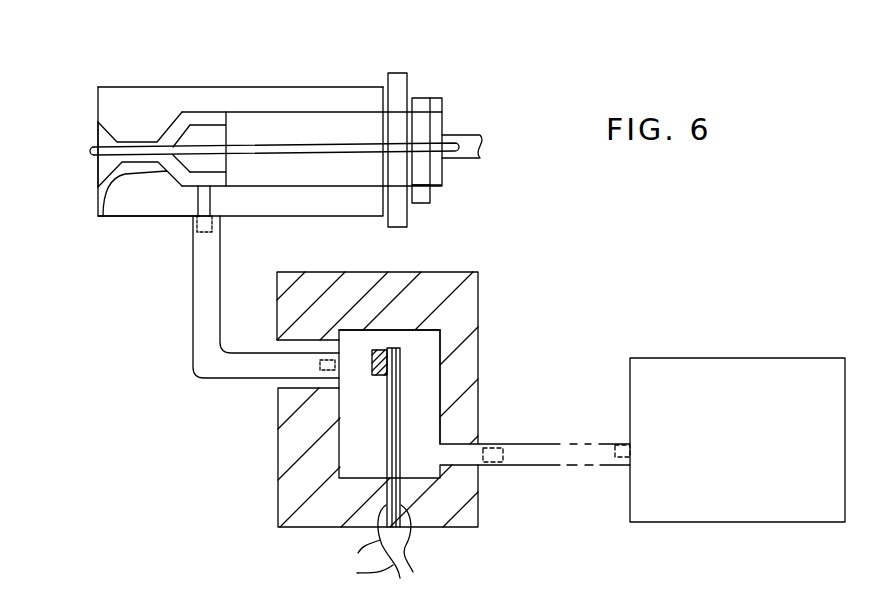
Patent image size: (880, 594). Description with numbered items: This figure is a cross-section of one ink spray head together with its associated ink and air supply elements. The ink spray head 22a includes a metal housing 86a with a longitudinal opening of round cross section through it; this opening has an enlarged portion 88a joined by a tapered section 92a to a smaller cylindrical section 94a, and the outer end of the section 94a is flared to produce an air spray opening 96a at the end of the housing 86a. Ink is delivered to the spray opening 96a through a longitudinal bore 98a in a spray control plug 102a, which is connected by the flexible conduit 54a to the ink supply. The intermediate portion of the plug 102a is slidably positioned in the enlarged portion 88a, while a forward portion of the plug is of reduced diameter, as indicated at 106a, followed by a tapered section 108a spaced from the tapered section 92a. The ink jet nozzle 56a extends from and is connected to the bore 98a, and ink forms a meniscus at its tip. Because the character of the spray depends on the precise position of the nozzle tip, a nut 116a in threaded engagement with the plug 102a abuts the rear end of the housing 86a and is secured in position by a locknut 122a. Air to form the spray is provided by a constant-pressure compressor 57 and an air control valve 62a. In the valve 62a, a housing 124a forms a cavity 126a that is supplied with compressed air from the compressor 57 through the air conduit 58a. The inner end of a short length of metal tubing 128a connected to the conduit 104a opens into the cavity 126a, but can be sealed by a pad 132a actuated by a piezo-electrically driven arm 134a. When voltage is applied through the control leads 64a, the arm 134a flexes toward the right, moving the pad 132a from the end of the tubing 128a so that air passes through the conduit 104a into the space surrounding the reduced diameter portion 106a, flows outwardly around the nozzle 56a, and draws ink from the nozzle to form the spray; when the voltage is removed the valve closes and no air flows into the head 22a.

The ink spray head 22a is at (345, 54).
The flexible conduit 54a is at (477, 135).
The ink jet nozzle 56a is at (92, 158).
The constant-pressure compressor 57 is at (789, 357).
The air conduit 58a is at (530, 440).
The air control valve 62a is at (276, 432).
The control leads 64a is at (359, 541).
The metal housing 86a is at (225, 86).
The enlarged portion 88a is at (359, 110).
The tapered section 92a is at (174, 86).
The smaller cylindrical section 94a is at (143, 141).
The air spray opening 96a is at (97, 130).
The longitudinal bore 98a is at (278, 144).
The spray control plug 102a is at (540, 84).
The conduit 104a is at (190, 297).
The reduced diameter portion 106a is at (190, 170).
The tapered section 108a is at (100, 217).
The nut 116a is at (406, 74).
The locknut 122a is at (425, 195).
The housing 124a is at (478, 362).
The cavity 126a is at (430, 347).
The metal tubing 128a is at (357, 360).
The pad 132a is at (370, 437).
The piezo-electrically driven arm 134a is at (403, 388).